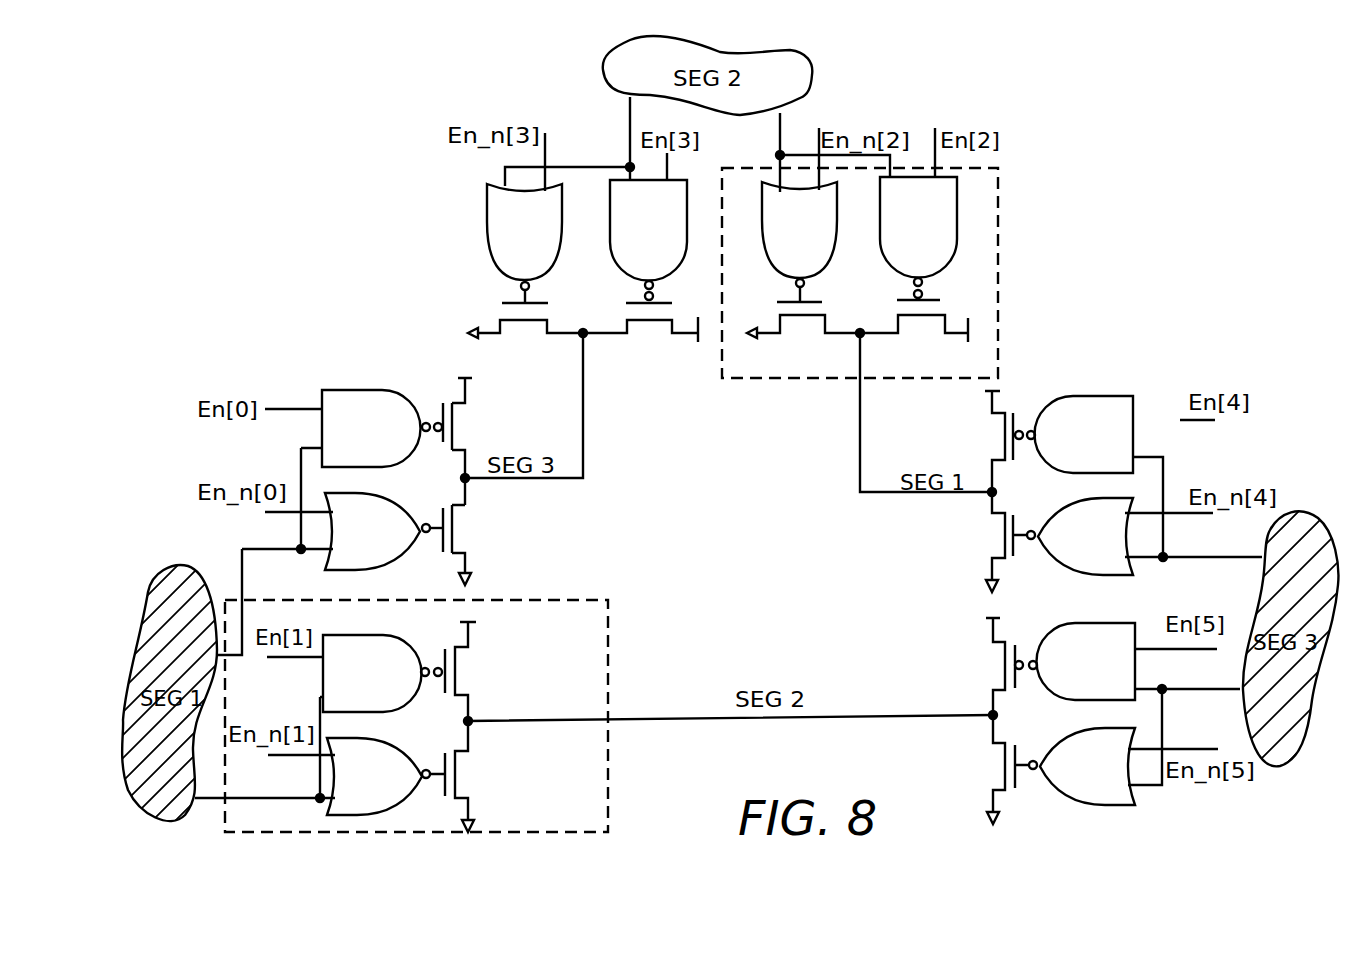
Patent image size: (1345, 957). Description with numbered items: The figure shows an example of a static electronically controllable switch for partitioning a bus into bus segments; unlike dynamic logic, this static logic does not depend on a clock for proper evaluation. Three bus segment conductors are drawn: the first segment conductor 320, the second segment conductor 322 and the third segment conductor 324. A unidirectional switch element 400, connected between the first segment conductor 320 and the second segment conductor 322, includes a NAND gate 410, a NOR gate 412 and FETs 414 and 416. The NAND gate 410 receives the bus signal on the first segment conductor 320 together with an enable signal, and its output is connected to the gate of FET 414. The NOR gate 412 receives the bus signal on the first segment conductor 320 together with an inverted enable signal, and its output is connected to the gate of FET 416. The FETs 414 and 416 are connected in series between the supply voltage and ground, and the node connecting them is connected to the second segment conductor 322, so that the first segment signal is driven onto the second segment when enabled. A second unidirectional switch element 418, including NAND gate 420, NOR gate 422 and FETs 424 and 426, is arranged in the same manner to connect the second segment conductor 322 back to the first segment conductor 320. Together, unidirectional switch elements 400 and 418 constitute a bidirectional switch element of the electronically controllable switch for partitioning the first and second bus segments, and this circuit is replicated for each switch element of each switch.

The bus segment 1 conductor 320 is at (282, 548).
The bus segment 2 conductor 322 is at (628, 113).
The bus segment 3 conductor 324 is at (587, 432).
The unidirectional switch element 400 is at (612, 769).
The NAND gate 410 is at (372, 634).
The NOR gate 412 is at (400, 745).
The FET 414 is at (458, 667).
The FET 416 is at (458, 776).
The unidirectional switch element 418 is at (1005, 210).
The NAND gate 420 is at (957, 207).
The NOR gate 422 is at (838, 207).
The FET 424 is at (906, 337).
The FET 426 is at (786, 337).